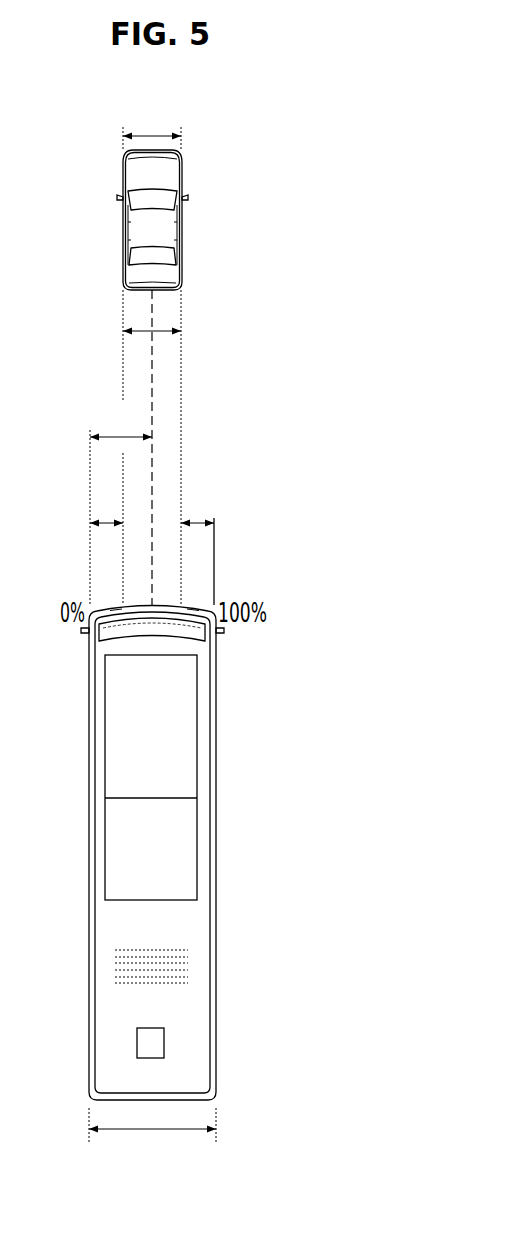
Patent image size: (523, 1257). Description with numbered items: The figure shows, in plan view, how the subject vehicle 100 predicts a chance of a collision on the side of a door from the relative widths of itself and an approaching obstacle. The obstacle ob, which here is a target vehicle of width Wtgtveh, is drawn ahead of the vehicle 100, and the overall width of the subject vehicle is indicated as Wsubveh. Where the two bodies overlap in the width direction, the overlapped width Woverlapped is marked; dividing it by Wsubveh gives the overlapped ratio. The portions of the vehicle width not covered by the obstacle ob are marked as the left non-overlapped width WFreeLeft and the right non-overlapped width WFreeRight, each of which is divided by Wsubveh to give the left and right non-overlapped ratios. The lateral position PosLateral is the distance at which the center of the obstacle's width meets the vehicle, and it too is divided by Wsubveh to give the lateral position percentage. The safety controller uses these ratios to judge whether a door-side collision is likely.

The vehicle 100 is at (207, 779).
The obstacle ob is at (181, 228).
The width of the target vehicle Wtgtveh is at (155, 124).
The overlapped width Woverlapped is at (185, 317).
The lateral position PosLateral is at (102, 424).
The left non-overlapped width WFreeLeft is at (78, 509).
The right non-overlapped width WFreeRight is at (229, 508).
The width of the subject vehicle Wsubveh is at (152, 1136).